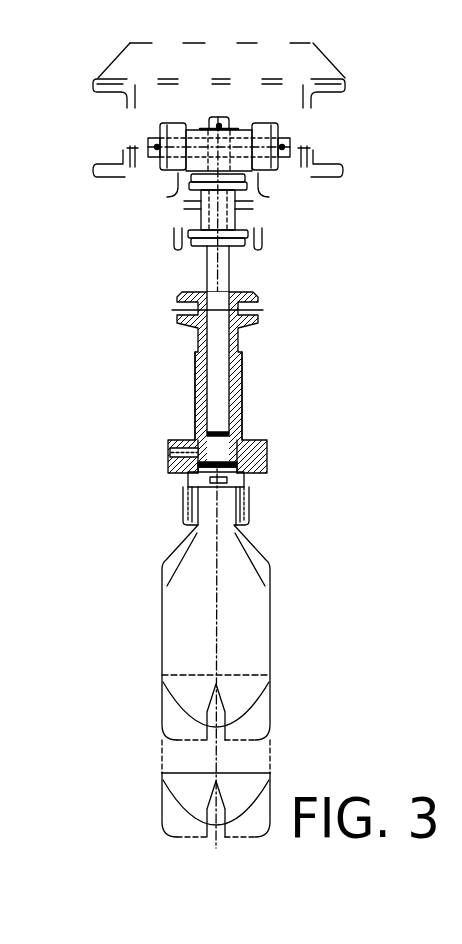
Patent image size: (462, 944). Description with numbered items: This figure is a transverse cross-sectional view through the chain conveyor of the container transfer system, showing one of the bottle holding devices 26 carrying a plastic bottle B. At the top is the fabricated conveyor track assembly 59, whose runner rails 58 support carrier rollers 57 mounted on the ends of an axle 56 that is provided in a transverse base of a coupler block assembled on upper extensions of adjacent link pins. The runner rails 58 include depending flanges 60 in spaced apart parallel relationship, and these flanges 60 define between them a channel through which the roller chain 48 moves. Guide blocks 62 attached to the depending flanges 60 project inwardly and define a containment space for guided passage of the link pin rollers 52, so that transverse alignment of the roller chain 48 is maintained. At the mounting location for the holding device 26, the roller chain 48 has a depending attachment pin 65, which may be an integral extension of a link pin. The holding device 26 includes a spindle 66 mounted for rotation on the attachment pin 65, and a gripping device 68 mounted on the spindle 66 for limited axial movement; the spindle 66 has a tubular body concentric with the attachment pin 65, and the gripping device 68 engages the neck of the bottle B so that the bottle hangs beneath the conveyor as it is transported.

The holding device 26 is at (282, 353).
The roller chain 48 is at (194, 258).
The roller 52 is at (248, 228).
The axle 56 is at (291, 144).
The carrier rollers 57 is at (177, 122).
The runner rails 58 is at (167, 197).
The conveyor track assembly 59 is at (96, 66).
The depending flanges 60 is at (175, 238).
The guide blocks 62 is at (253, 201).
The attachment pin 65 is at (197, 366).
The spindle 66 is at (240, 387).
The gripping device 68 is at (281, 450).
The plastic bottle B is at (162, 650).